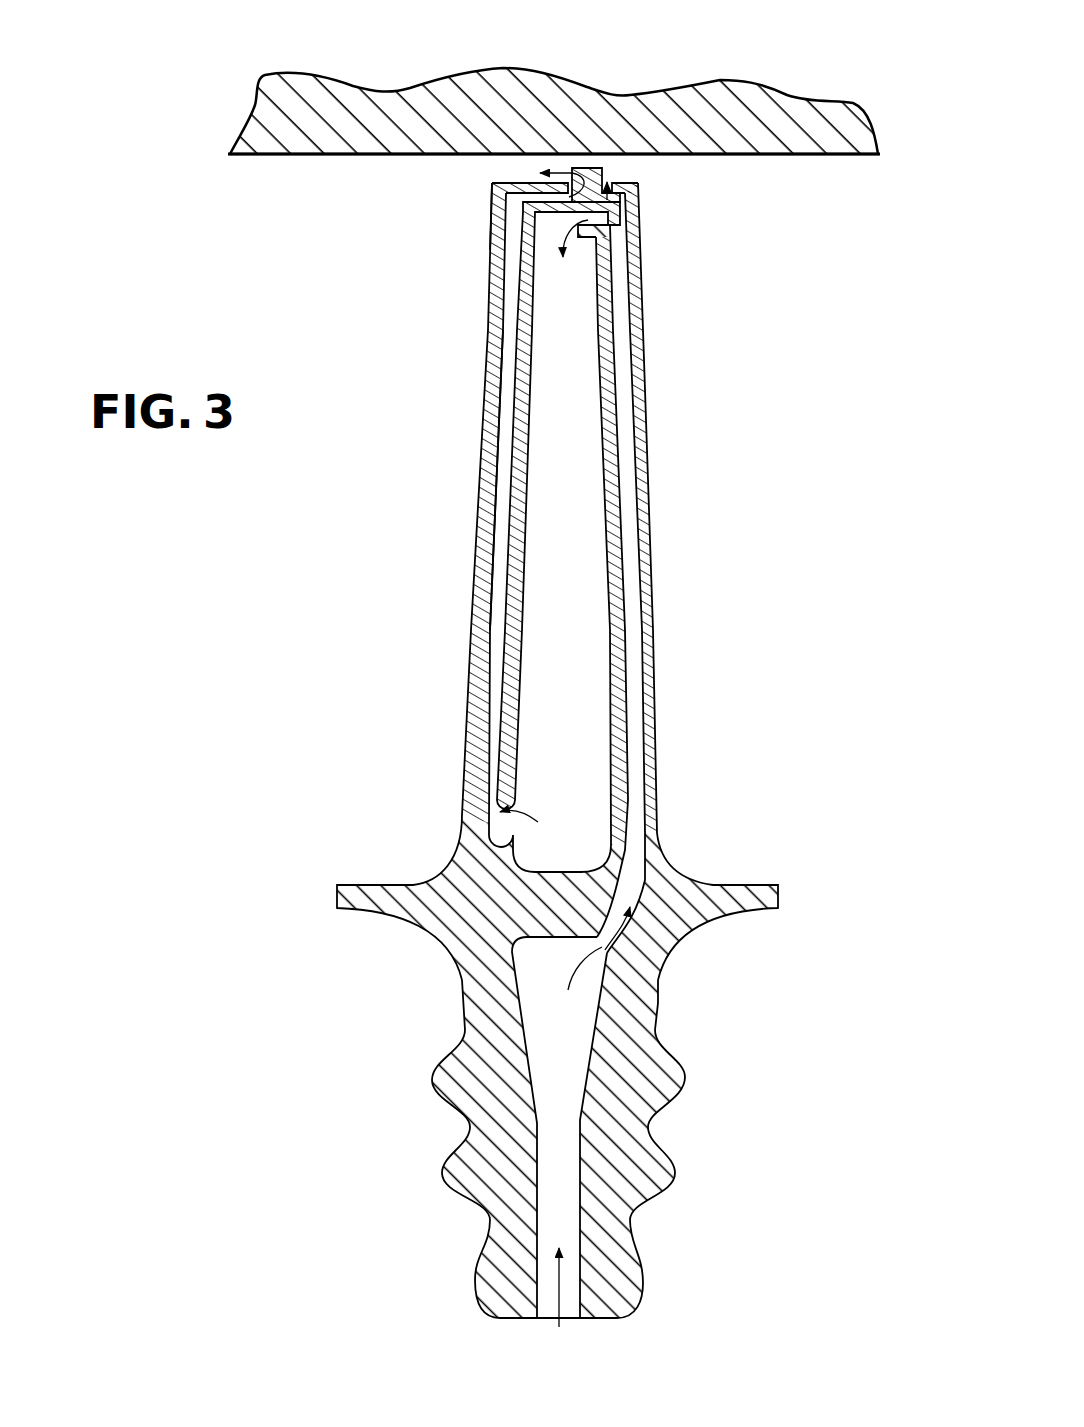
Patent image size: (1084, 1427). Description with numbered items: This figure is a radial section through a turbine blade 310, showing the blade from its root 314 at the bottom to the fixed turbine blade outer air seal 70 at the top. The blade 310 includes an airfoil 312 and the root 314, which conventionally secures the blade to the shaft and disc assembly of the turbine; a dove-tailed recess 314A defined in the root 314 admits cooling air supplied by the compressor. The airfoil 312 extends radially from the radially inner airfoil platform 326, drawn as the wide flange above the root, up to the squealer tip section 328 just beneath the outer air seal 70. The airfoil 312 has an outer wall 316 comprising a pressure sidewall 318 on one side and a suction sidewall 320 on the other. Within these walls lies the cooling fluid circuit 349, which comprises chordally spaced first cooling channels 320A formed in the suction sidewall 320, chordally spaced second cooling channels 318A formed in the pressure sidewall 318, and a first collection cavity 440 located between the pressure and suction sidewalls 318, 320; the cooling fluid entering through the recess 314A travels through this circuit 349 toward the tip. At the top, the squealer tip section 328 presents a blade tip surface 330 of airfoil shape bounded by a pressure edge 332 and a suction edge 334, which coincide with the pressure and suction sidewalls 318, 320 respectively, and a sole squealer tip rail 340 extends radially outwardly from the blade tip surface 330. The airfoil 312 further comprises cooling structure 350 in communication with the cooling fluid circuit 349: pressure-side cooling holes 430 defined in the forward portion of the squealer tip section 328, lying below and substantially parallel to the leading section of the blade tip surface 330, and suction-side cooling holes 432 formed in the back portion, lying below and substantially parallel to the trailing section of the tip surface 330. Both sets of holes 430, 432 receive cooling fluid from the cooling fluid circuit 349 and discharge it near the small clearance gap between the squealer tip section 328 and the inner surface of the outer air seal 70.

The turbine blade outer air seal 70 is at (483, 105).
The squealer tip section 328 is at (607, 155).
The pressure-side cooling holes 430 is at (540, 212).
The squealer tip rail 340 is at (604, 174).
The blade tip surface 330 is at (513, 182).
The pressure edge 332 is at (490, 183).
The suction edge 334 is at (637, 182).
The suction-side cooling holes 432 is at (622, 194).
The cooling structure 350 is at (610, 197).
The airfoil 312 is at (605, 675).
The turbine blade 310 is at (617, 675).
The pressure sidewall 318 is at (487, 403).
The second cooling channels 318A is at (498, 573).
The outer wall 316 is at (640, 395).
The first collection cavity 440 is at (560, 505).
The suction sidewall 320 is at (647, 580).
The cooling fluid circuit 349 is at (497, 655).
The first cooling channels 320A is at (647, 765).
The airfoil platform 326 is at (778, 895).
The dove-tailed recess 314A is at (593, 1067).
The root 314 is at (703, 1153).